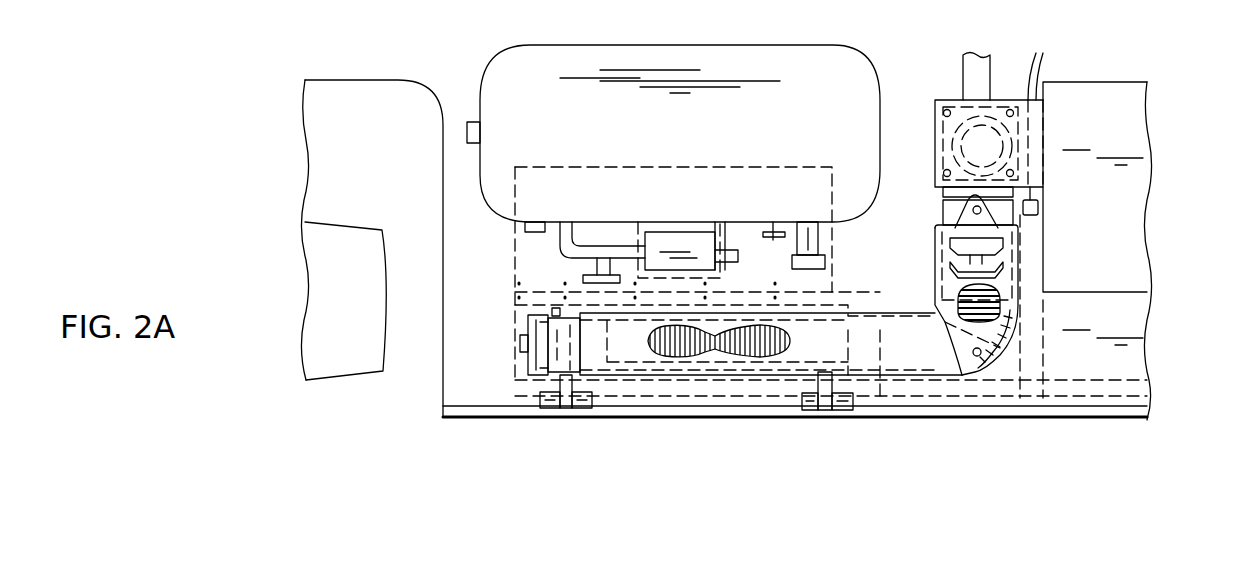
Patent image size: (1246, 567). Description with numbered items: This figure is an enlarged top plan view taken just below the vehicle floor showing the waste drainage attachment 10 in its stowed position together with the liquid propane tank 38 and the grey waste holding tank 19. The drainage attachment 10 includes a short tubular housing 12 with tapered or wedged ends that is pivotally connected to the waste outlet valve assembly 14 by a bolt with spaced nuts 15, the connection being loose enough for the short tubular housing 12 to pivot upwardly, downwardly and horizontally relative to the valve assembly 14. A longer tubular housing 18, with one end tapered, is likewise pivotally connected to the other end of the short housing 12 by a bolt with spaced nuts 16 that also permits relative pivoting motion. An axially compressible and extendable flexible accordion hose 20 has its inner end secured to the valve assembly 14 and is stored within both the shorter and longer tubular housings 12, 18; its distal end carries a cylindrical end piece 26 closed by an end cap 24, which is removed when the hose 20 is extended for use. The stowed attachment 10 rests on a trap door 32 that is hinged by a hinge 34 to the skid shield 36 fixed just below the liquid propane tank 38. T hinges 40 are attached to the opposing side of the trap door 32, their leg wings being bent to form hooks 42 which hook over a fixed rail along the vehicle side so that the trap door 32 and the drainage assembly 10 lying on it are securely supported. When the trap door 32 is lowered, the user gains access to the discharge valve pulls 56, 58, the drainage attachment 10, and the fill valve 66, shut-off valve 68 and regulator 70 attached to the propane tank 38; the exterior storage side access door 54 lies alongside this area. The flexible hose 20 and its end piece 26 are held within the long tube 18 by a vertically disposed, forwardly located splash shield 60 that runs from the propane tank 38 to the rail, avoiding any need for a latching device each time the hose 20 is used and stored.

The waste drainage attachment 10 is at (876, 417).
The short tubular housing 12 is at (935, 252).
The waste outlet valve assembly 14 is at (935, 143).
The bolt with spaced nuts 15 is at (972, 210).
The bolt with spaced nuts 16 is at (985, 352).
The longer tubular housing 18 is at (920, 378).
The grey waste holding tank 19 is at (1067, 130).
The flexible accordion hose 20 is at (693, 357).
The end cap 24 is at (530, 326).
The cylindrical end piece 26 is at (560, 352).
The trap door 32 is at (882, 338).
The hinge 34 is at (745, 292).
The skid shield 36 is at (675, 168).
The liquid propane tank 38 is at (697, 45).
The T hinges 40 is at (576, 395).
The hooks 42 is at (575, 378).
The exterior storage side access door 54 is at (1110, 318).
The discharge valve pull 56 is at (1010, 265).
The discharge valve pull 58 is at (1040, 208).
The splash shield 60 is at (513, 362).
The fill valve 66 is at (812, 265).
The shut-off valve 68 is at (617, 274).
The regulator 70 is at (673, 250).